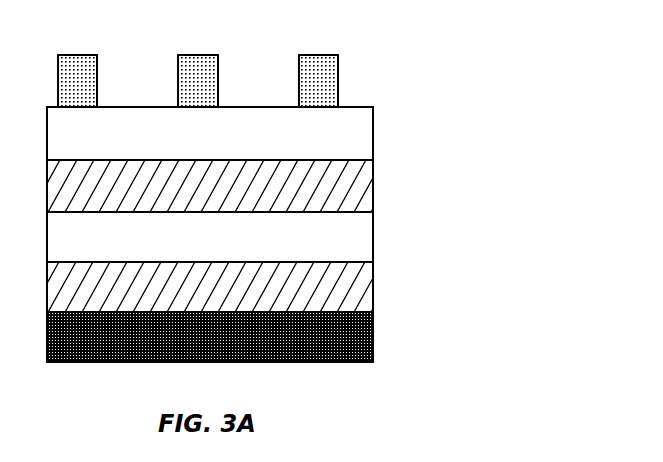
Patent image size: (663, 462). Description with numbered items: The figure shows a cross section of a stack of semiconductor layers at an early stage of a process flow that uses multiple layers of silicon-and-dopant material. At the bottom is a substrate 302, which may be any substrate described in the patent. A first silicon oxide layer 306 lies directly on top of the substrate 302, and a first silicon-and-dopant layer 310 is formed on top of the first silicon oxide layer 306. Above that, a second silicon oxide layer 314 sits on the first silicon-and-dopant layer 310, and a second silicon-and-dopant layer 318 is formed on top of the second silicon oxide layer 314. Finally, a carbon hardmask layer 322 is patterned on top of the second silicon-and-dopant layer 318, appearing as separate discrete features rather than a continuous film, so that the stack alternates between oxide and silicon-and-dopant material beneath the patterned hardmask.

The substrate 302 is at (368, 338).
The first silicon oxide layer 306 is at (360, 290).
The first silicon-and-dopant layer 310 is at (360, 240).
The second silicon oxide layer 314 is at (360, 195).
The second silicon-and-dopant layer 318 is at (360, 147).
The carbon hardmask layer 322 is at (332, 83).